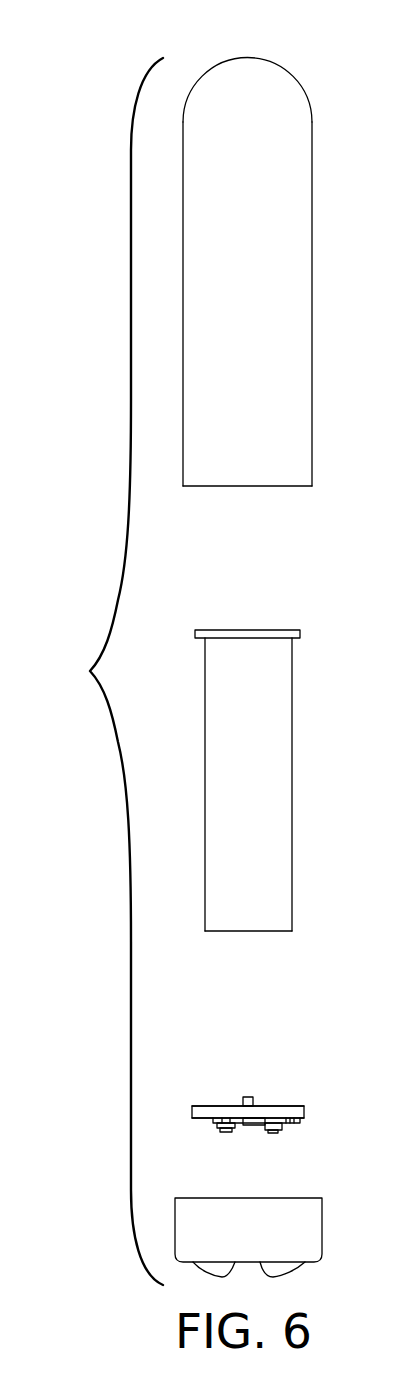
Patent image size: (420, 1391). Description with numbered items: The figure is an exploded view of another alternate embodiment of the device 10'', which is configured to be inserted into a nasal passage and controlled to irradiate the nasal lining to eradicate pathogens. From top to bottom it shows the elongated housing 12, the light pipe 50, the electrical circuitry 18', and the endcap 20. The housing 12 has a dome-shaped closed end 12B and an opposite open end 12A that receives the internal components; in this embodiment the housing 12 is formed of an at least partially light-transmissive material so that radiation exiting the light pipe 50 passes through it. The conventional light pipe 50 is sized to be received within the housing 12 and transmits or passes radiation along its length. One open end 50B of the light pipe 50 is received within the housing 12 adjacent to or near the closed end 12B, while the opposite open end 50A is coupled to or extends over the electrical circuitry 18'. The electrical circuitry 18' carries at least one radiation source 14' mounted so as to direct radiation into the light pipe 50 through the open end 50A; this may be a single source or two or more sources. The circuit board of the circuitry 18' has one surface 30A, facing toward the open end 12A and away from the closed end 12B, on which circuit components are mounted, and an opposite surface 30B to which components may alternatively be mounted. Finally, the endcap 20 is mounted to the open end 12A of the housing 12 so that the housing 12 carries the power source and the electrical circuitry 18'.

The device 10'' is at (95, 671).
The housing 12 is at (286, 275).
The open end 12A is at (259, 486).
The closed end 12B is at (247, 57).
The light pipe 50 is at (276, 782).
The open end 50A is at (257, 931).
The open end 50B is at (245, 630).
The electrical circuitry 18' is at (277, 1104).
The radiation source 14' is at (265, 1070).
The surface 30A is at (203, 1122).
The surface 30B is at (220, 1106).
The endcap 20 is at (322, 1222).